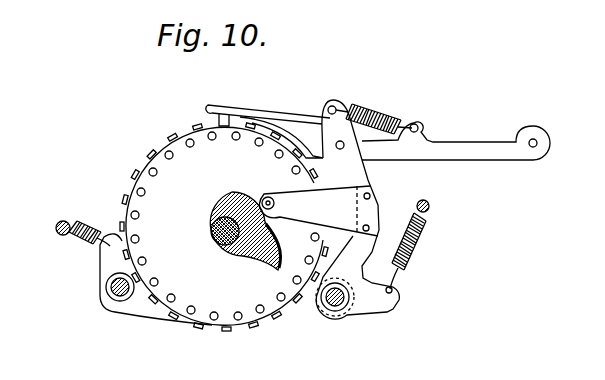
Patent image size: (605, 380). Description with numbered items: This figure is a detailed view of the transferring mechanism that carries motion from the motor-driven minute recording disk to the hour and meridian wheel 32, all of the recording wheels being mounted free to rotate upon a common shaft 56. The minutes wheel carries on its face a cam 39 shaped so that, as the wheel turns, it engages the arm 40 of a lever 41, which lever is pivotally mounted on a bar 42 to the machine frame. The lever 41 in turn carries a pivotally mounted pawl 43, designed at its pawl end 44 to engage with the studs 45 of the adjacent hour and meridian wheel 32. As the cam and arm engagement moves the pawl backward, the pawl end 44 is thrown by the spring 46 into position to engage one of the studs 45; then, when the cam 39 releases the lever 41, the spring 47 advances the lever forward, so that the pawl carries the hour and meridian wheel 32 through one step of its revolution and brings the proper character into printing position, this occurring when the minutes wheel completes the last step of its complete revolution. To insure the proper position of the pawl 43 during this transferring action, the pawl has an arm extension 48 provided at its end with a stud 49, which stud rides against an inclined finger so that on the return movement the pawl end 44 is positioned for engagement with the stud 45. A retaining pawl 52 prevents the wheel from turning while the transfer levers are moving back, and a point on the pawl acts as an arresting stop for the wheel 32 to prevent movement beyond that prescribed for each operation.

The hour and meridian wheel 32 is at (224, 321).
The cam 39 is at (257, 256).
The arm 40 is at (318, 211).
The lever 41 is at (365, 178).
The bar 42 is at (333, 311).
The pawl 43 is at (312, 122).
The pawl end 44 is at (226, 114).
The studs 45 is at (130, 185).
The spring 46 is at (377, 116).
The spring 47 is at (421, 240).
The arm extension 48 is at (473, 146).
The stud 49 is at (551, 145).
The retaining pawl 52 is at (148, 308).
The common shaft 56 is at (221, 221).